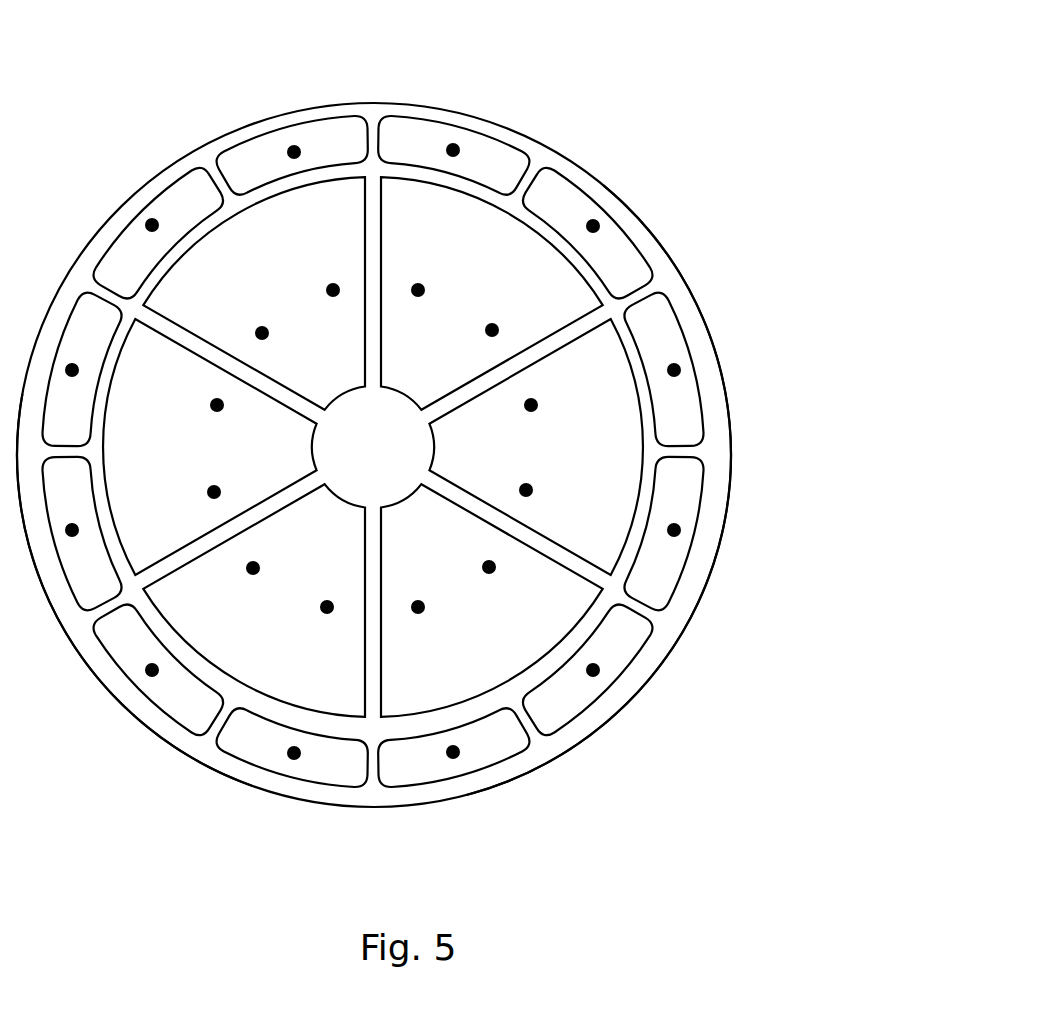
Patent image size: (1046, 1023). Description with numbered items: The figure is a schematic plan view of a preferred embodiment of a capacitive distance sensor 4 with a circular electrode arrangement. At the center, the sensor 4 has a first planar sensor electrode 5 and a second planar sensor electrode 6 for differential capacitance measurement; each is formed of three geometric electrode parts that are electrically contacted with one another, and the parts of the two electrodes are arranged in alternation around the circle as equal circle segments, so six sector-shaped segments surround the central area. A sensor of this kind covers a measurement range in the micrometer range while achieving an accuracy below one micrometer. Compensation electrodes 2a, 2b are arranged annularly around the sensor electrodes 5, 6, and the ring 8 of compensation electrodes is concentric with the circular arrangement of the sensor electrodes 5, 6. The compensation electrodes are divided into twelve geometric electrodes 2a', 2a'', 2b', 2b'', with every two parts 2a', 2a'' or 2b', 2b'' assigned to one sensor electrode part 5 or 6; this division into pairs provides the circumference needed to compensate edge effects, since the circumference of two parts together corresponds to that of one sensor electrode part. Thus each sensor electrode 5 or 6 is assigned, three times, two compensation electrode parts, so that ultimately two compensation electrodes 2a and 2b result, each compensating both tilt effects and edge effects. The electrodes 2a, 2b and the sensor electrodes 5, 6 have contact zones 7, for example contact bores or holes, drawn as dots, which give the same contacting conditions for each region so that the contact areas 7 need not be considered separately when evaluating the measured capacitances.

The capacitive distance sensor 4 is at (606, 138).
The contact zones 7 is at (590, 228).
The compensation electrode 2a is at (460, 373).
The compensation electrode part 2a' is at (737, 360).
The compensation electrode part 2a'' is at (739, 534).
The compensation electrode 2b is at (365, 595).
The compensation electrode part 2b' is at (652, 669).
The compensation electrode part 2b'' is at (477, 773).
The ring of compensation electrodes 8 is at (689, 618).
The first planar sensor electrode 5 is at (431, 553).
The second planar sensor electrode 6 is at (325, 553).